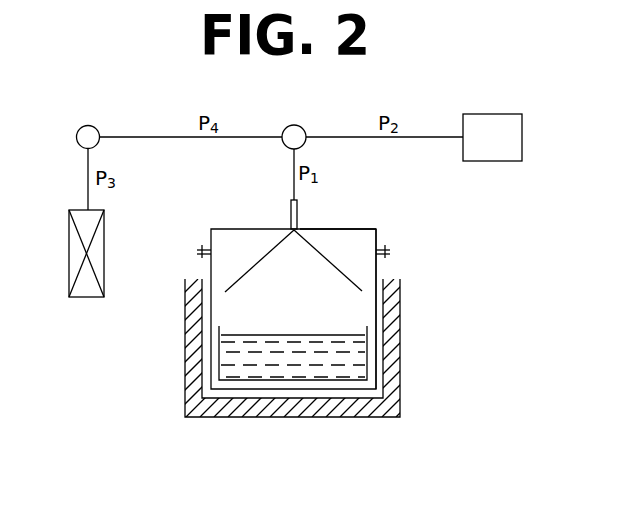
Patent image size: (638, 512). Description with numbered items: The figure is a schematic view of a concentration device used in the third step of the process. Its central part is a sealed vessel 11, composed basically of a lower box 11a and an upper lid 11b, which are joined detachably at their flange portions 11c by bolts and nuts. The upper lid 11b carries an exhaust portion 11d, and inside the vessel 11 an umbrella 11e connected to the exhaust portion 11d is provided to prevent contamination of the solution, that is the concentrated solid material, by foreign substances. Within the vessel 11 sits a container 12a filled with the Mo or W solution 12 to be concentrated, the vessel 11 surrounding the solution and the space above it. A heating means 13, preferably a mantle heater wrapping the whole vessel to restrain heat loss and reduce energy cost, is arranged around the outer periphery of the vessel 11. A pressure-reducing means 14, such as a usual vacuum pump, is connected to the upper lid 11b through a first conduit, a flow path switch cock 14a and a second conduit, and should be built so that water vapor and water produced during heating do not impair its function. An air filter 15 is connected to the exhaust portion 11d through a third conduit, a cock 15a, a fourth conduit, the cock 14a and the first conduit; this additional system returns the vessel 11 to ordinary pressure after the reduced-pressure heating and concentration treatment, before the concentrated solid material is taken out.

The sealed vessel 11 is at (211, 320).
The lower box 11a is at (378, 258).
The upper lid 11b is at (354, 229).
The flange portions 11c is at (388, 247).
The exhaust portion 11d is at (298, 215).
The umbrella 11e is at (360, 292).
The Mo or W solution 12 is at (330, 370).
The container 12a is at (256, 382).
The heating means 13 is at (393, 362).
The pressure-reducing means 14 is at (493, 122).
The flow path switch cock 14a is at (298, 126).
The air filter 15 is at (104, 233).
The cock 15a is at (89, 133).